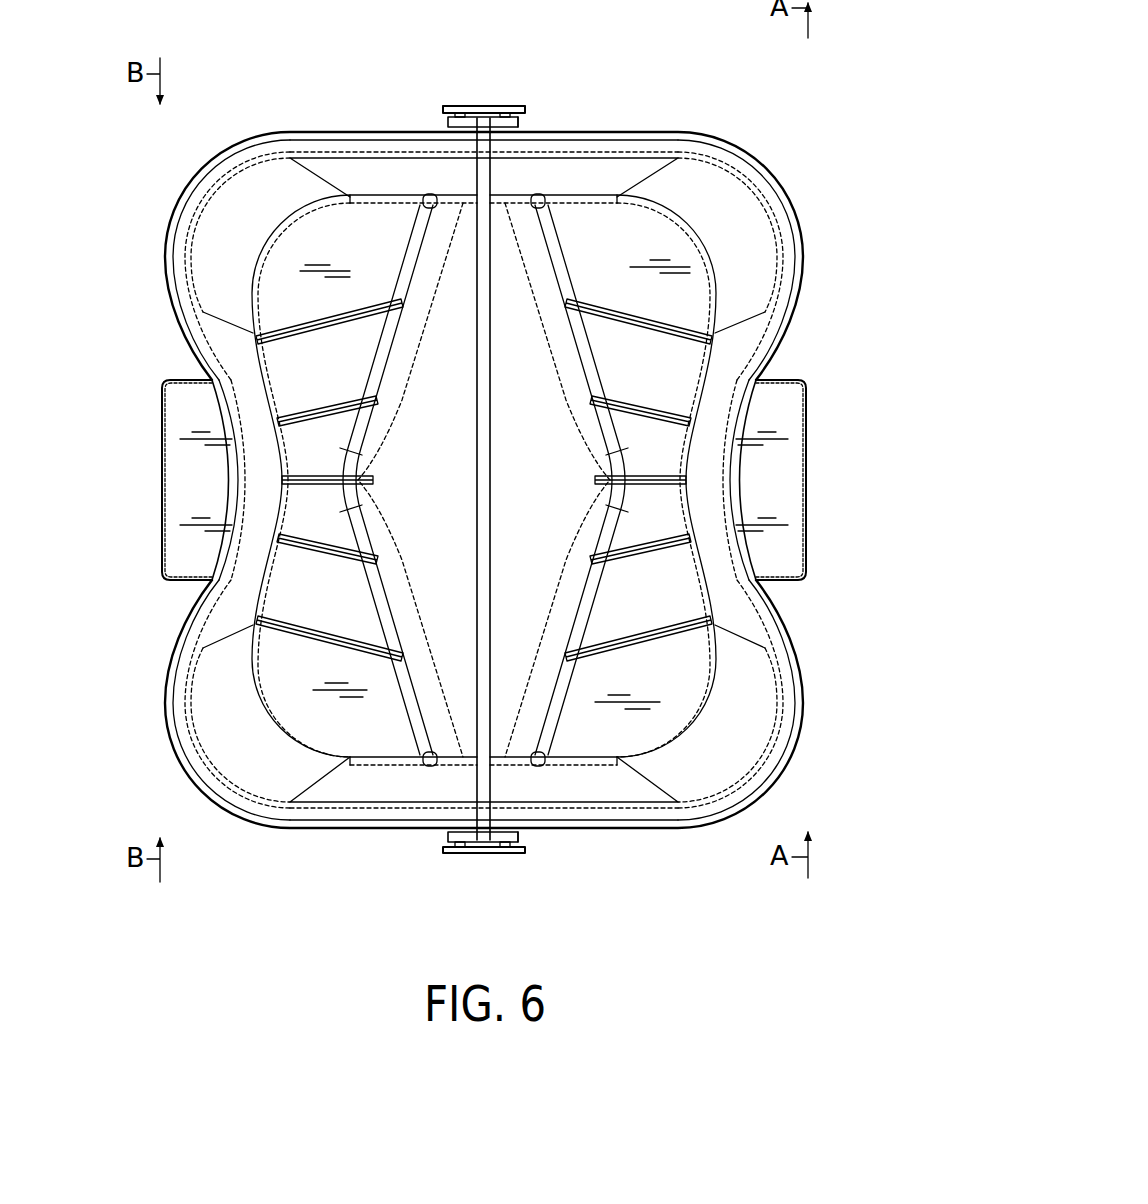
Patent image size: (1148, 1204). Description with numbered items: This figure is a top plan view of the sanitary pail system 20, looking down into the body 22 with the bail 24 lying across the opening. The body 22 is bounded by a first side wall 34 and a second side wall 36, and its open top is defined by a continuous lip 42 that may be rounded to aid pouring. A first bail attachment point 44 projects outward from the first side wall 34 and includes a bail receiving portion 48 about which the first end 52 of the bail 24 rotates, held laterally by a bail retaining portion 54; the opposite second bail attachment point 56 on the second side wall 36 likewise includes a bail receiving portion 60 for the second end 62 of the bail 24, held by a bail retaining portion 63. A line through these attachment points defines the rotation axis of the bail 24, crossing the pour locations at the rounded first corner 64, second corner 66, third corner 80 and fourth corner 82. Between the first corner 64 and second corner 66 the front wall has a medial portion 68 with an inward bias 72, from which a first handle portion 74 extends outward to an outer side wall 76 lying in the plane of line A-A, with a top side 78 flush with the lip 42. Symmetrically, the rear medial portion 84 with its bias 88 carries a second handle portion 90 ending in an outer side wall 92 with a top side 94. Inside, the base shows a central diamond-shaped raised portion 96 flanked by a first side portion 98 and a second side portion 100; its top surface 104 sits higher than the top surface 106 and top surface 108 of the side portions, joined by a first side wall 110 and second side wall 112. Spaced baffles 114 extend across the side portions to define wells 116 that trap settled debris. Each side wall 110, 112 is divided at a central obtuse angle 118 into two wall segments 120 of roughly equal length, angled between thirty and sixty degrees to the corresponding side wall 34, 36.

The sanitary pail system 20 is at (883, 110).
The body 22 is at (792, 178).
The bail 24 is at (487, 177).
The first side wall 34 is at (578, 790).
The second side wall 36 is at (393, 160).
The lip 42 is at (790, 660).
The first bail attachment point 44 is at (522, 860).
The bail receiving portion 48 is at (437, 843).
The first end of the bail 52 is at (505, 853).
The bail retaining portion 54 is at (455, 853).
The second bail attachment point 56 is at (427, 103).
The bail receiving portion 60 is at (463, 118).
The second end of the bail 62 is at (530, 122).
The bail retaining portion 63 is at (505, 106).
The first corner 64 is at (755, 720).
The second corner 66 is at (758, 264).
The medial portion 68 is at (718, 600).
The bias 72 is at (757, 348).
The first handle portion 74 is at (785, 400).
The outer side wall 76 is at (810, 495).
The top side 78 is at (783, 490).
The third corner 80 is at (205, 236).
The fourth corner 82 is at (207, 720).
The medial portion 84 is at (233, 612).
The bias 88 is at (200, 318).
The second handle portion 90 is at (193, 400).
The outer side wall 92 is at (161, 428).
The top side 94 is at (225, 492).
The raised portion 96 is at (515, 283).
The first side portion 98 is at (673, 245).
The second side portion 100 is at (318, 240).
The top surface 104 is at (554, 492).
The top surface 106 is at (669, 382).
The top surface 108 is at (337, 386).
The first side wall 110 is at (570, 300).
The second side wall 112 is at (405, 290).
The baffles 114 is at (420, 397).
The wells 116 is at (437, 590).
The obtuse angle 118 is at (363, 470).
The wall segments 120 is at (420, 255).